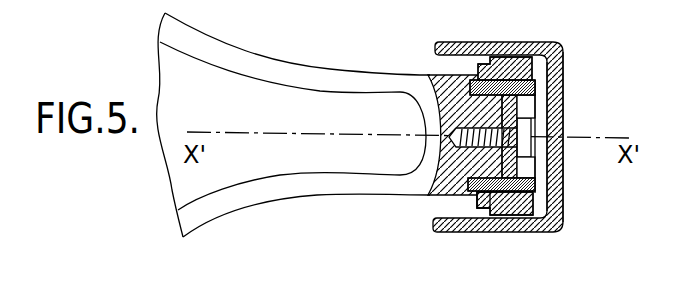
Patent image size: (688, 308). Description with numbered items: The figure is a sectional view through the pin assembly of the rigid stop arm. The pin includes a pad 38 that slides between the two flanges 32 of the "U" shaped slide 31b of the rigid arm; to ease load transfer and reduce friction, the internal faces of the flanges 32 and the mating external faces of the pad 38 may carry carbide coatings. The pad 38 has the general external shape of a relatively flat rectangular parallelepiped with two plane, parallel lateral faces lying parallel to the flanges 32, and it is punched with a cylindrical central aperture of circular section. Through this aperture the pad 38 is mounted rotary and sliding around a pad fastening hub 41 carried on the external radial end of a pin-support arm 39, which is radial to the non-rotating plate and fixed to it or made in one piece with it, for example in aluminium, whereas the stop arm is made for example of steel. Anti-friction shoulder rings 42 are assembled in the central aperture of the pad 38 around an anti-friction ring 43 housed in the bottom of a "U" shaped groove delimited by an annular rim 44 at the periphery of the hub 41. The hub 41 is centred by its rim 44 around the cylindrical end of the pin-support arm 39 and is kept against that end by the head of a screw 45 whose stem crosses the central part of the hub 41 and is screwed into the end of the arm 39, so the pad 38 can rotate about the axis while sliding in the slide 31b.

The "U" shaped slide 31b is at (557, 151).
The flanges 32 is at (437, 47).
The pad 38 is at (482, 215).
The pin-support arm 39 is at (297, 183).
The pad fastening hub 41 is at (520, 109).
The anti-friction shoulder rings 42 is at (506, 57).
The anti-friction ring 43 is at (535, 187).
The annular rim 44 is at (532, 91).
The screw 45 is at (448, 138).